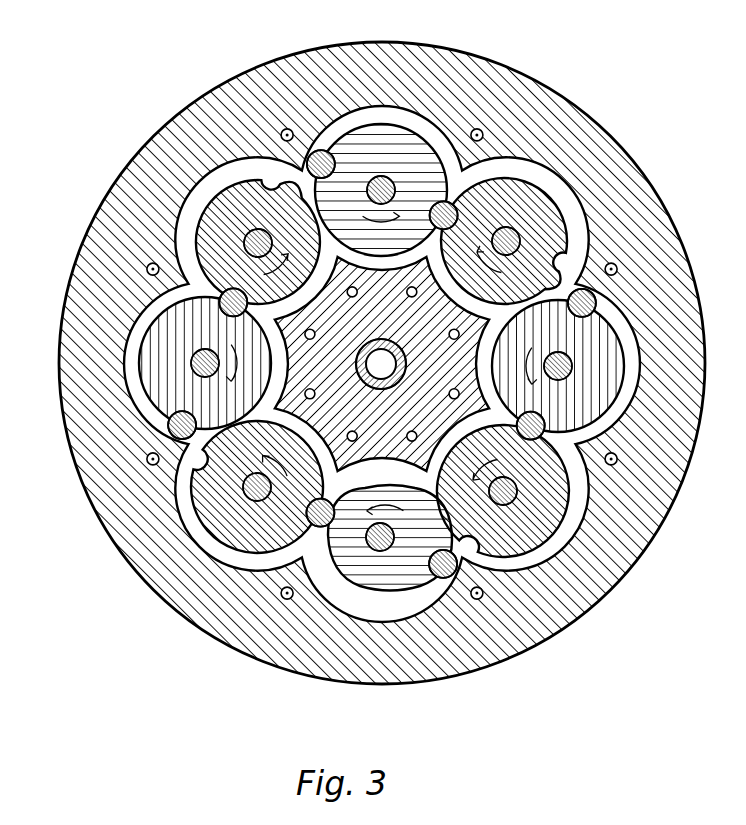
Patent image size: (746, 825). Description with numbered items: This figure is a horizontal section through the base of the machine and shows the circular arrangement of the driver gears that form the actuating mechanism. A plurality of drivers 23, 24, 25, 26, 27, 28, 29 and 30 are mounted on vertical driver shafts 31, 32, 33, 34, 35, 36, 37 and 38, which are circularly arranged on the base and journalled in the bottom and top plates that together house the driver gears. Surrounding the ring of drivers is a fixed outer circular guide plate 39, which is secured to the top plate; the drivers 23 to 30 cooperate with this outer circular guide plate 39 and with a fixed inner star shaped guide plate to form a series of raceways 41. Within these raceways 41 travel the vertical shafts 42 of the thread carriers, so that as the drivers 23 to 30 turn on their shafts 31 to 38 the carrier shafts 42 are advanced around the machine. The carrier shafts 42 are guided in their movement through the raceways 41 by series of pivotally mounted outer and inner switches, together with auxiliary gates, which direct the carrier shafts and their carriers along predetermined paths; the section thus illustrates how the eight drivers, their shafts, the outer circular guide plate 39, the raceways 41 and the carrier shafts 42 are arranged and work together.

The driver 23 is at (600, 342).
The driver 24 is at (553, 212).
The driver 25 is at (403, 148).
The driver 26 is at (234, 218).
The driver 27 is at (152, 355).
The driver 28 is at (240, 487).
The driver 29 is at (373, 585).
The driver 30 is at (540, 527).
The driver shaft 31 is at (562, 366).
The driver shaft 32 is at (512, 240).
The driver shaft 33 is at (392, 182).
The driver shaft 34 is at (256, 232).
The driver shaft 35 is at (195, 365).
The driver shaft 36 is at (250, 500).
The driver shaft 37 is at (388, 560).
The driver shaft 38 is at (512, 493).
The outer circular guide plate 39 is at (657, 485).
The raceway 41 is at (378, 118).
The shaft of thread carrier 42 is at (462, 170).